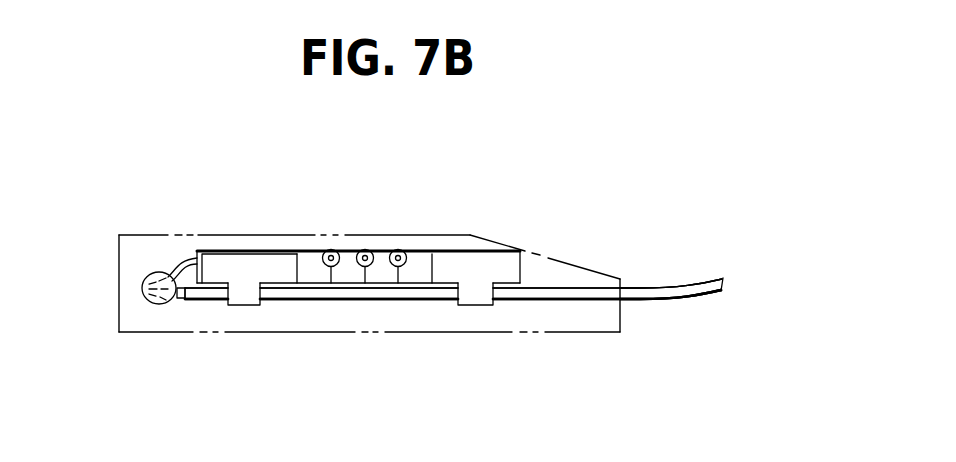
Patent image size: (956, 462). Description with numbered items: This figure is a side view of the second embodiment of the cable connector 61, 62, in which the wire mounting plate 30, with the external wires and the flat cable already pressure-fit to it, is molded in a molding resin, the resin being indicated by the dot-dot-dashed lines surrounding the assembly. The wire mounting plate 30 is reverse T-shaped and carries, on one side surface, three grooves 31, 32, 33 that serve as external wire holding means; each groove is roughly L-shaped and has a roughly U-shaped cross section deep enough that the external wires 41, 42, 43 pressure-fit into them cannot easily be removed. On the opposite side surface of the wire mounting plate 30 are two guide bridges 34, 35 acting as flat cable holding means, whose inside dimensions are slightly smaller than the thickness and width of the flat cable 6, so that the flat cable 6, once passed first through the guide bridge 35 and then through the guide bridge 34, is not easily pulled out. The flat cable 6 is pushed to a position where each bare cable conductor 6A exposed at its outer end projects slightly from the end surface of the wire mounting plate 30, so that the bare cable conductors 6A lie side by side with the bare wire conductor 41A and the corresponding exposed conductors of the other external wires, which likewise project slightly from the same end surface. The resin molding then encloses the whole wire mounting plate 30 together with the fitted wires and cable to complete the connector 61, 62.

The flat cable 6 is at (668, 287).
The bare cable conductor 6A is at (178, 302).
The wire mounting plate 30 is at (467, 253).
The groove 31 is at (331, 267).
The groove 32 is at (366, 267).
The groove 33 is at (399, 267).
The guide bridge 34 is at (245, 297).
The guide bridge 35 is at (478, 300).
The external wire 41 is at (331, 249).
The external wire 42 is at (365, 249).
The external wire 43 is at (398, 249).
The bare wire conductor 41A is at (185, 258).
The cable connector 61 is at (357, 333).
The cable connector 62 is at (356, 345).